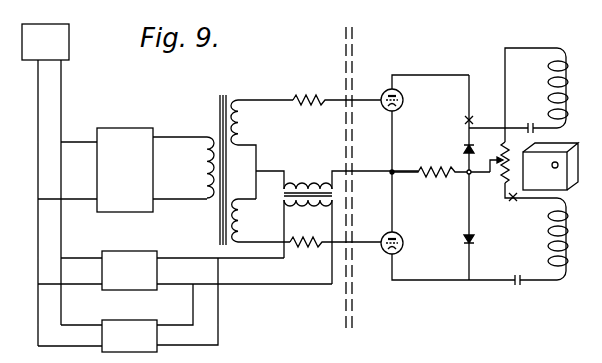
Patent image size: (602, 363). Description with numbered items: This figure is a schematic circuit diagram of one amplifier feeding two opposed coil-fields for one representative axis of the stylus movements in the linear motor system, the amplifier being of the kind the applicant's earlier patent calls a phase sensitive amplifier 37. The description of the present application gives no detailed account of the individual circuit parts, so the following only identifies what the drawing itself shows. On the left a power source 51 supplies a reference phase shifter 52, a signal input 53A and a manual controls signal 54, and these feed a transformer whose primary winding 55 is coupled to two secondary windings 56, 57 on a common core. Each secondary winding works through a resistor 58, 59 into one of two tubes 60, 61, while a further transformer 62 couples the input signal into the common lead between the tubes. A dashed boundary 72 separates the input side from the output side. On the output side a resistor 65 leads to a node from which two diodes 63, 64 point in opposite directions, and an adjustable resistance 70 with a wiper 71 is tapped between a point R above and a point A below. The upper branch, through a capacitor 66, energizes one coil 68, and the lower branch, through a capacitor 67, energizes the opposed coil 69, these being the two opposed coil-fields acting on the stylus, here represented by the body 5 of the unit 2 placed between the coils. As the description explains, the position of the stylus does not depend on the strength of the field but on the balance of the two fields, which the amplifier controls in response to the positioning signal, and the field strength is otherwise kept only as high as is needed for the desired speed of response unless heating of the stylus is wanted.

The stimulator unit 2 is at (554, 158).
The housing with indicator 5 is at (545, 171).
The phase sensitive amplifier 37 is at (206, 170).
The power source 51 is at (67, 40).
The reference phase shifter 52 is at (125, 163).
The signal input 53A is at (129, 264).
The manual controls signal 54 is at (129, 329).
The primary winding 55 is at (183, 167).
The secondary winding 56 is at (262, 149).
The secondary winding 57 is at (261, 220).
The resistor 58 is at (337, 107).
The resistor 59 is at (335, 251).
The tube 60 is at (425, 153).
The tube 61 is at (448, 256).
The transformer 62 is at (337, 226).
The diode 63 is at (449, 148).
The diode 64 is at (454, 238).
The resistor 65 is at (441, 181).
The capacitor 66 is at (502, 120).
The capacitor 67 is at (525, 291).
The coil 68 is at (536, 87).
The coil 69 is at (541, 240).
The potentiometer 70 is at (515, 161).
The wiper arm 71 is at (491, 160).
The cable / potentiometer portion 72 is at (359, 171).
The contact point A is at (512, 204).
The contact point R is at (464, 118).